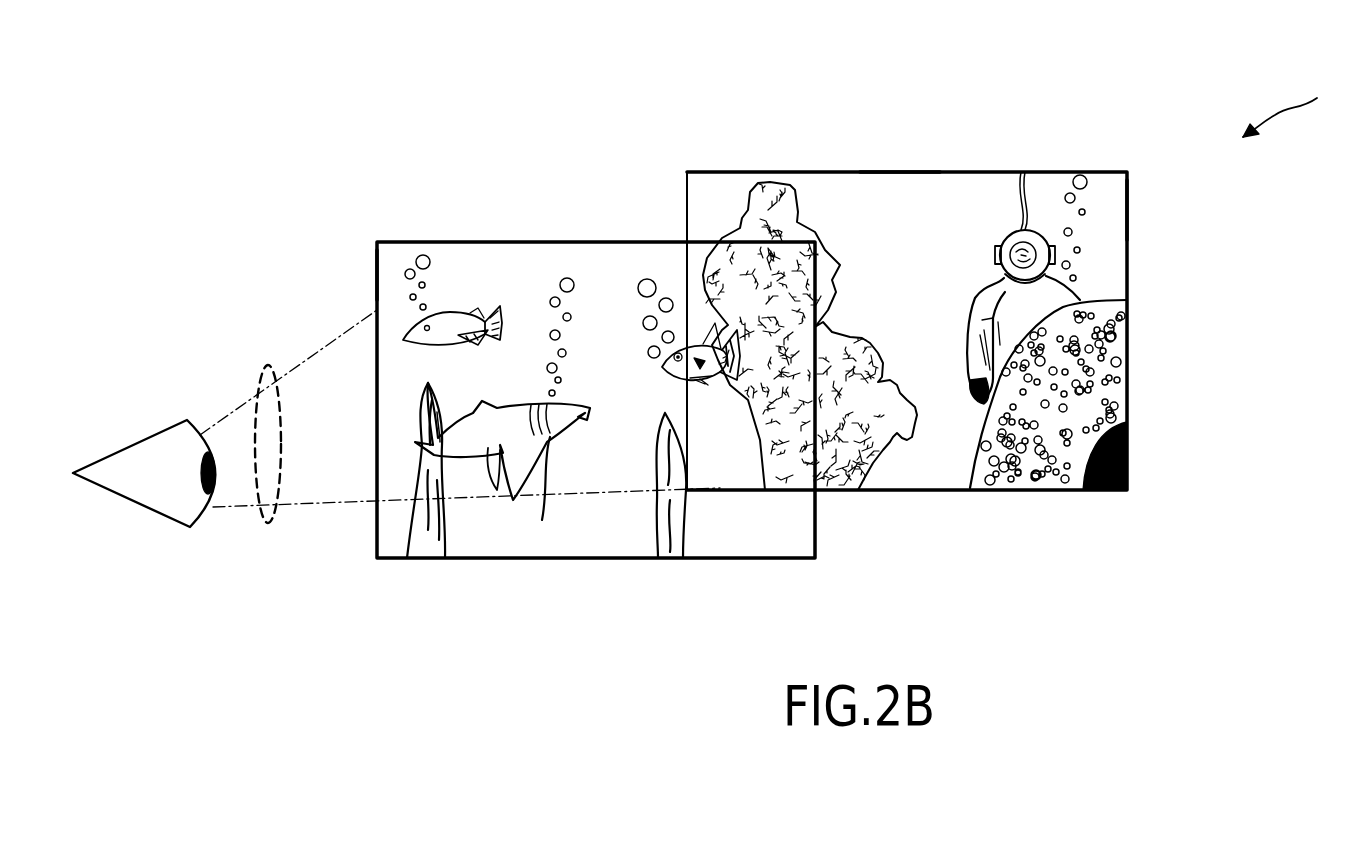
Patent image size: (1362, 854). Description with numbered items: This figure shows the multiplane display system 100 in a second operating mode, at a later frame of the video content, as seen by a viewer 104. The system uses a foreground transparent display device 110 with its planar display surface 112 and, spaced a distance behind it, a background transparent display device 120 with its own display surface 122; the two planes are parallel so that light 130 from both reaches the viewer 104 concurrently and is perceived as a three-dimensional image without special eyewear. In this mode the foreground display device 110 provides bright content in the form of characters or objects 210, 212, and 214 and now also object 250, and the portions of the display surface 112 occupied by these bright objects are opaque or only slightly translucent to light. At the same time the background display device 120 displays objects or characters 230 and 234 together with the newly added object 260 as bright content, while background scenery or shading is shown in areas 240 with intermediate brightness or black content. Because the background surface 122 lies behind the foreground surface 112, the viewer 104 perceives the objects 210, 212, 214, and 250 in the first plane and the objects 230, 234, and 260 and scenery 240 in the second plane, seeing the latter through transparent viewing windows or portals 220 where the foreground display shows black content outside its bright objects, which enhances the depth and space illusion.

The multiplane display system 100 is at (1298, 102).
The viewer 104 is at (137, 505).
The foreground transparent display device 110 is at (377, 241).
The foreground display surface 112 is at (390, 277).
The background transparent display device 120 is at (1127, 174).
The background display surface 122 is at (1118, 210).
The light 130 is at (277, 505).
The character/object 210 is at (450, 512).
The character/object 212 is at (438, 346).
The character/object 214 is at (667, 380).
The transparent viewing windows/portals 220 is at (525, 550).
The object/character 230 is at (1110, 298).
The object/character 234 is at (840, 262).
The background scenery areas 240 is at (899, 180).
The character/object 250 is at (502, 455).
The object/character 260 is at (1005, 235).